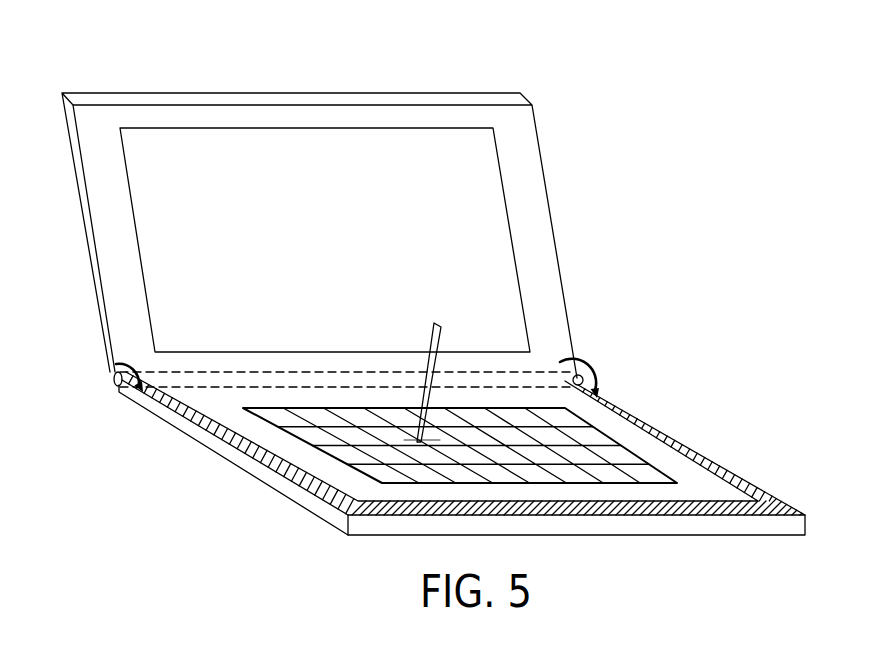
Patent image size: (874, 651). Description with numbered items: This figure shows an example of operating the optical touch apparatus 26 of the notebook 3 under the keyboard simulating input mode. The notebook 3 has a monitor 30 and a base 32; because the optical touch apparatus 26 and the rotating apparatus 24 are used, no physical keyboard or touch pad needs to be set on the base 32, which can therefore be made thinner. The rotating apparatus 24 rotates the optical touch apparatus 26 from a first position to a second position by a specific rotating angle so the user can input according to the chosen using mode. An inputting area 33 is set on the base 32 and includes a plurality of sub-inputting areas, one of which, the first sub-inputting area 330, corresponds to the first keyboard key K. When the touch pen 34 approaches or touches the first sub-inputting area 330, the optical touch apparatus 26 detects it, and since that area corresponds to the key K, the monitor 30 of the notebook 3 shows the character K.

The notebook 3 is at (297, 56).
The monitor 30 is at (230, 137).
The rotating apparatus 24 is at (114, 380).
The optical touch apparatus 26 is at (657, 428).
The base 32 is at (193, 432).
The inputting area 33 is at (366, 470).
The first sub-inputting area 330 is at (393, 440).
The touch pen 34 is at (440, 343).